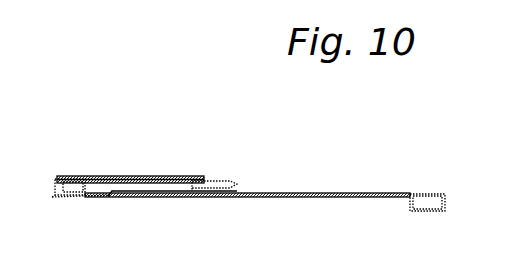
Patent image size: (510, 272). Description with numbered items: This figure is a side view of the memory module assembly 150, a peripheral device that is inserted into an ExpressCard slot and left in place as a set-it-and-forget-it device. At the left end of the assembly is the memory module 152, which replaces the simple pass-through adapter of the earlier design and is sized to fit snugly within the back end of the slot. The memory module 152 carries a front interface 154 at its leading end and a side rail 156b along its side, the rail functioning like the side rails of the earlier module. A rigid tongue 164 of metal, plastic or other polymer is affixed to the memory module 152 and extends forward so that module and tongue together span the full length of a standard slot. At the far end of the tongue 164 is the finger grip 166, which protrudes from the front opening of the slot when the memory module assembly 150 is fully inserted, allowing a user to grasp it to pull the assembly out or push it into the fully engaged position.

The memory module assembly 150 is at (296, 158).
The memory module 152 is at (131, 177).
The front interface 154 is at (61, 194).
The side rail 156b is at (156, 187).
The tongue 164 is at (356, 193).
The finger grip 166 is at (420, 212).